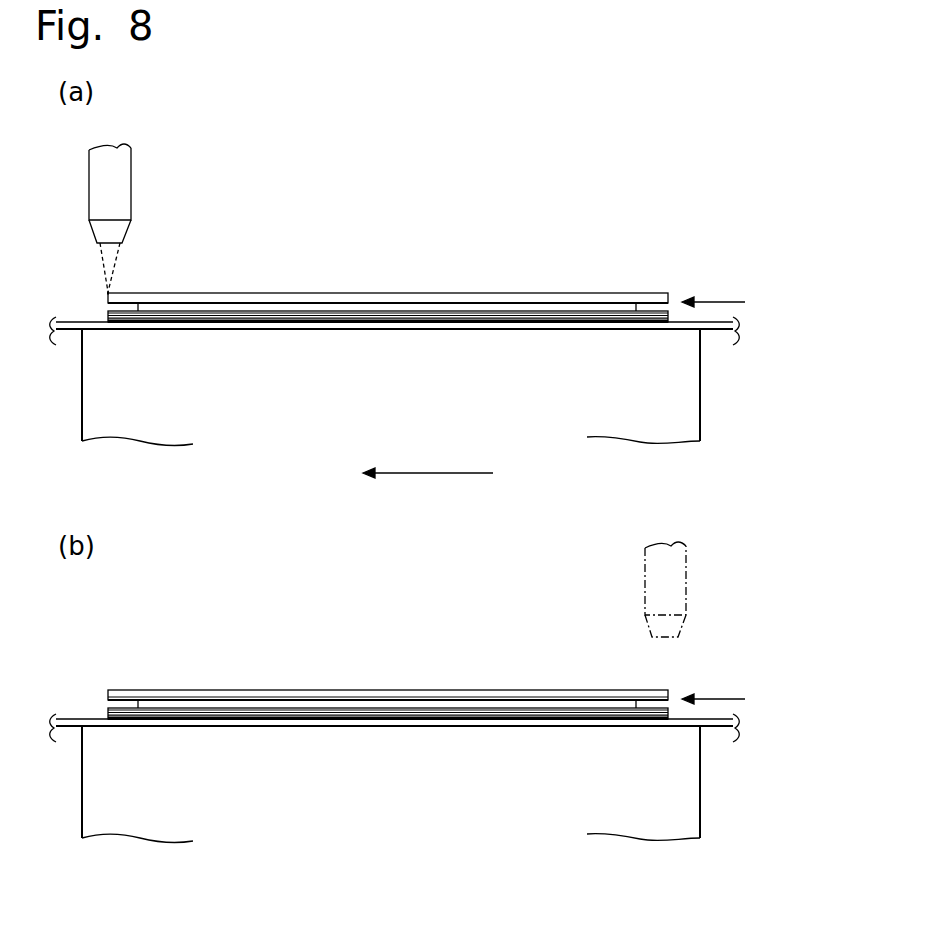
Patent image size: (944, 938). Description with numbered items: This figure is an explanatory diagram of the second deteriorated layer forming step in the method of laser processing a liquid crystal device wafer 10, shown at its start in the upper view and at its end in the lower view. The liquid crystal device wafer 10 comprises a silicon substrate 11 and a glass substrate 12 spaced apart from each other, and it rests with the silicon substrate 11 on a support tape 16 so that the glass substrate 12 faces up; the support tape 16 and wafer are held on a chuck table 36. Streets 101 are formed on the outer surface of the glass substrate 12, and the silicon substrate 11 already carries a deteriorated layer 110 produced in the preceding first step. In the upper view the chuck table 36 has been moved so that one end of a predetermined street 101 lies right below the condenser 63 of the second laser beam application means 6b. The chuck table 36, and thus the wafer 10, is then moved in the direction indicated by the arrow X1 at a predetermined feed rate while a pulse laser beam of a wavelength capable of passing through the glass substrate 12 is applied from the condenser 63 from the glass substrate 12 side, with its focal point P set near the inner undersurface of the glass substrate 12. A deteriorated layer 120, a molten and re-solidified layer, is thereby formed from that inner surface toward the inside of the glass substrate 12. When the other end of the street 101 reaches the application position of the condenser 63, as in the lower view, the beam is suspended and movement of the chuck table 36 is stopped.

The second laser beam application means 6b is at (150, 203).
The condenser 63 is at (123, 188).
The focal point P is at (107, 302).
The liquid crystal device wafer 10 is at (388, 260).
The glass substrate 12 is at (340, 293).
The deteriorated layer 120 is at (325, 700).
The silicon substrate 11 is at (433, 310).
The deteriorated layer 110 is at (550, 318).
The street 101 is at (742, 303).
The support tape 16 is at (63, 330).
The chuck table 36 is at (683, 398).
The arrow X1 is at (410, 473).